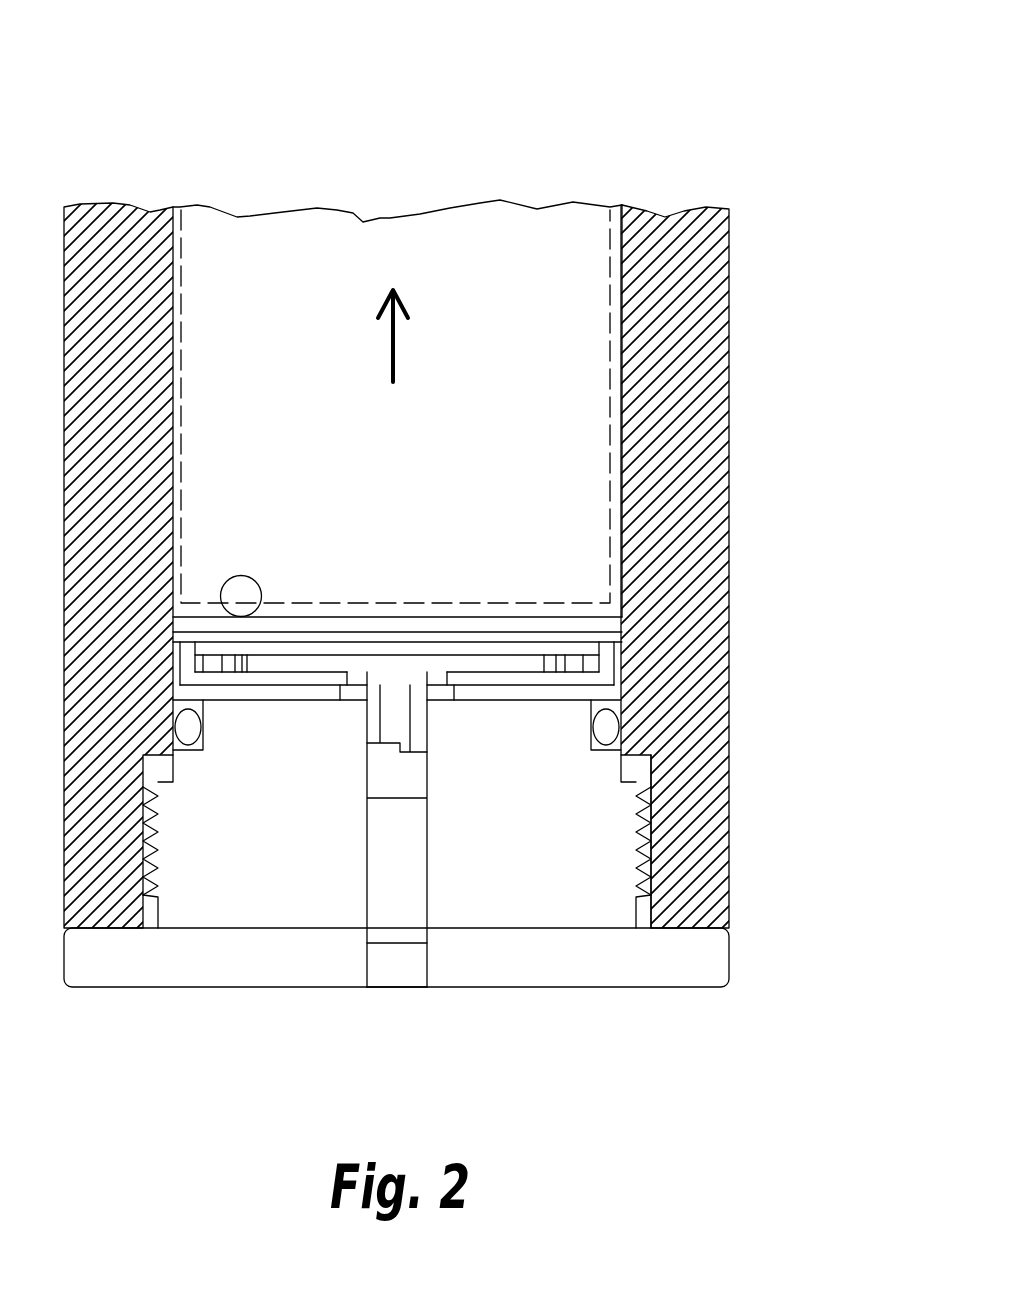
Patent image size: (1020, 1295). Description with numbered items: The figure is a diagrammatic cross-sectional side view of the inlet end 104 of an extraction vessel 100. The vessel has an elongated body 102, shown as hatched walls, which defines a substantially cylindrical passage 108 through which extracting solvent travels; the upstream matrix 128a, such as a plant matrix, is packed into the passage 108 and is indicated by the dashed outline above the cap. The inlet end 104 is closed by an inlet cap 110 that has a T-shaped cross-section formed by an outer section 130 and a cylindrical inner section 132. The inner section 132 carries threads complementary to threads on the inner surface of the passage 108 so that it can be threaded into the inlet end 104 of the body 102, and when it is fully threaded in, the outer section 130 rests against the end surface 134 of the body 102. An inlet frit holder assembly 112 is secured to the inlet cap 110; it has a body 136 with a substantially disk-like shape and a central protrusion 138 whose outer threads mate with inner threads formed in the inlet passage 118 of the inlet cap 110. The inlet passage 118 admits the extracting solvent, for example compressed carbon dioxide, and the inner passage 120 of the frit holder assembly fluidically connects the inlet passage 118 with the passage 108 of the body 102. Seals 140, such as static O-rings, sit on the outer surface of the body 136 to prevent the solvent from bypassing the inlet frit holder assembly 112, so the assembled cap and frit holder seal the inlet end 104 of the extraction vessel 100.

The extraction vessel 100 is at (520, 124).
The elongated body 102 is at (732, 480).
The inlet end 104 is at (597, 1090).
The passage 108 is at (625, 279).
The inlet cap 110 is at (512, 988).
The inlet frit holder assembly 112 is at (637, 641).
The inlet passage 118 is at (367, 955).
The inner passage 120 is at (368, 765).
The upstream matrix 128a is at (610, 388).
The outer section 130 is at (730, 957).
The cylindrical inner section 132 is at (653, 823).
The end surface 134 is at (690, 920).
The body 136 is at (607, 695).
The central protrusion 138 is at (427, 740).
The seals 140 is at (615, 737).